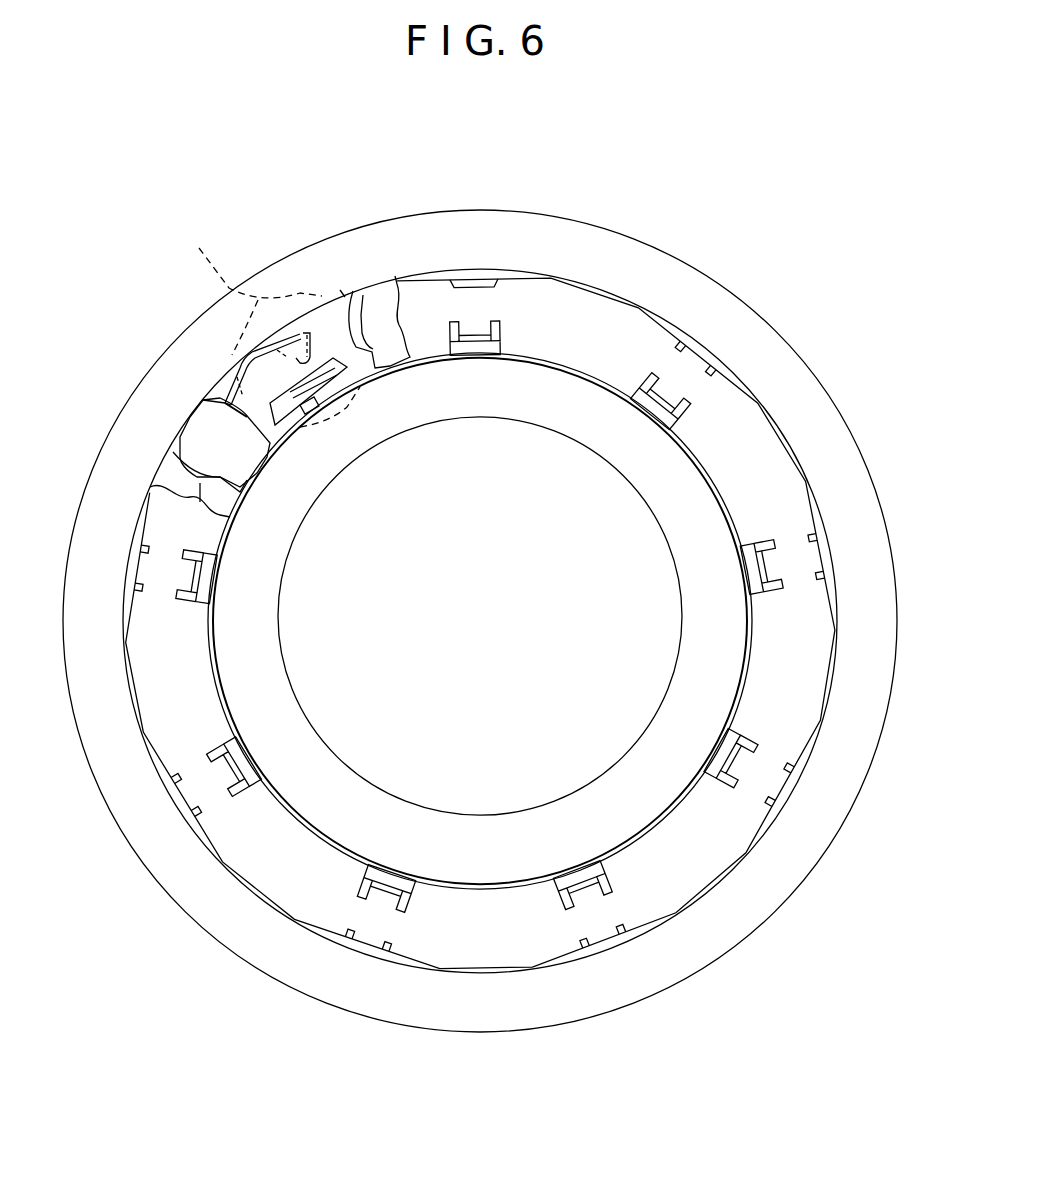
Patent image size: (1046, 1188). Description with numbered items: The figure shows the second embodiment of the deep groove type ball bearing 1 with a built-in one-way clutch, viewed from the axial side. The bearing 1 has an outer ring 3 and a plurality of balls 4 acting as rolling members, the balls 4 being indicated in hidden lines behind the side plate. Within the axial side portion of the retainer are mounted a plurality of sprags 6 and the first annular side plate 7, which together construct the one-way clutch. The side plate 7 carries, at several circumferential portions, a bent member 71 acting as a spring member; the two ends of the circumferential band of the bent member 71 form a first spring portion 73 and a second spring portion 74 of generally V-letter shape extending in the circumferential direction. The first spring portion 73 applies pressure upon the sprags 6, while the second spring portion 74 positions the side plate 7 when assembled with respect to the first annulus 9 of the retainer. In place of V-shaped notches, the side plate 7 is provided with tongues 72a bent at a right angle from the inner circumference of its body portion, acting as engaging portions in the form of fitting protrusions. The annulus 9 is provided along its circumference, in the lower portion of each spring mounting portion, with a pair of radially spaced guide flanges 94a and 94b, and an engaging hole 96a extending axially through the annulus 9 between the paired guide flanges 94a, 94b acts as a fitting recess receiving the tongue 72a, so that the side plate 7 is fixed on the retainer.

The deep groove type ball bearing 1 is at (684, 236).
The outer ring 3 is at (766, 332).
The balls 4 is at (273, 322).
The sprags 6 is at (400, 276).
The first annular side plate 7 is at (267, 870).
The first annulus 9 is at (343, 297).
The bent member 71 is at (240, 360).
The tongue 72a is at (183, 570).
The first spring portion 73 is at (230, 393).
The second spring portion 74 is at (318, 330).
The guide flange 94a is at (342, 362).
The guide flange 94b is at (327, 387).
The engaging hole 96a is at (305, 418).